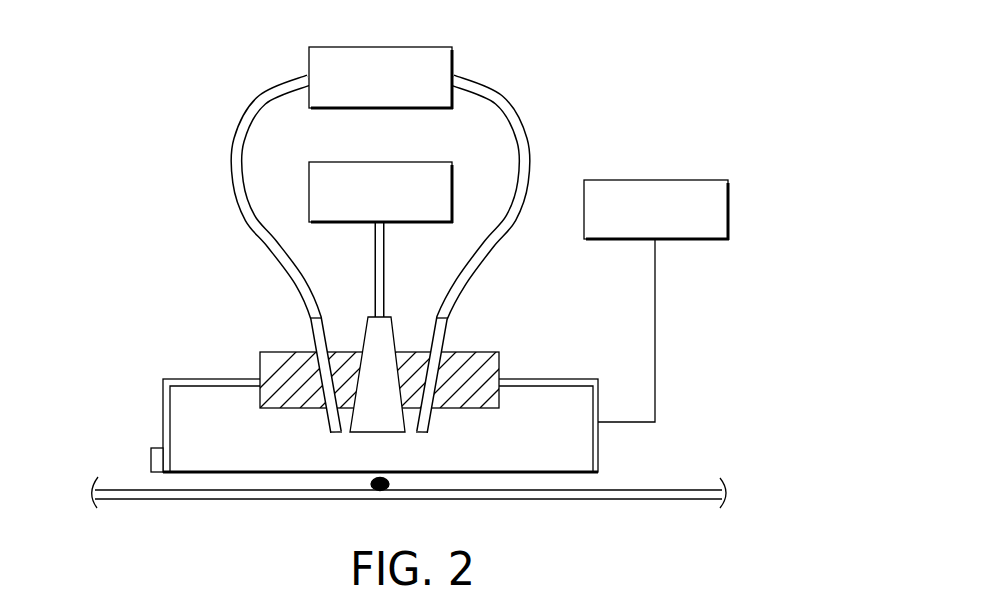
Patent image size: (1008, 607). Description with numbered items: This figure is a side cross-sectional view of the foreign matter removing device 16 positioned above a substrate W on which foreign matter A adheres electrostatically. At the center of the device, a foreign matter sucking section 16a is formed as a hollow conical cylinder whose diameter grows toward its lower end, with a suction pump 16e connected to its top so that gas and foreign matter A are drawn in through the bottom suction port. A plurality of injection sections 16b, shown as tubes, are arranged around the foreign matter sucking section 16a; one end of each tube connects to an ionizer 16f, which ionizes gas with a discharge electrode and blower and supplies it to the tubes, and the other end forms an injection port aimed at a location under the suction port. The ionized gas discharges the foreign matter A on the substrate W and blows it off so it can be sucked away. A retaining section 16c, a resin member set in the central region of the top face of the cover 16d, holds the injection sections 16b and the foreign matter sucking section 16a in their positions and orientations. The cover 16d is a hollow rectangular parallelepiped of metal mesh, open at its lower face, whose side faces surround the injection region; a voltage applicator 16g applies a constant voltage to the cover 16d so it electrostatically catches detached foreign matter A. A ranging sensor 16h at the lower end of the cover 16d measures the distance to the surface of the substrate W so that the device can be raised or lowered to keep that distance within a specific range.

The foreign matter removing device 16 is at (672, 19).
The foreign matter sucking section 16a is at (366, 337).
The injection sections 16b is at (316, 342).
The retaining section 16c is at (472, 352).
The cover 16d is at (566, 379).
The suction pump 16e is at (437, 163).
The ionizer 16f is at (438, 46).
The voltage applicator 16g is at (681, 180).
The ranging sensor 16h is at (150, 461).
The substrate W is at (663, 490).
The foreign matter A is at (386, 488).